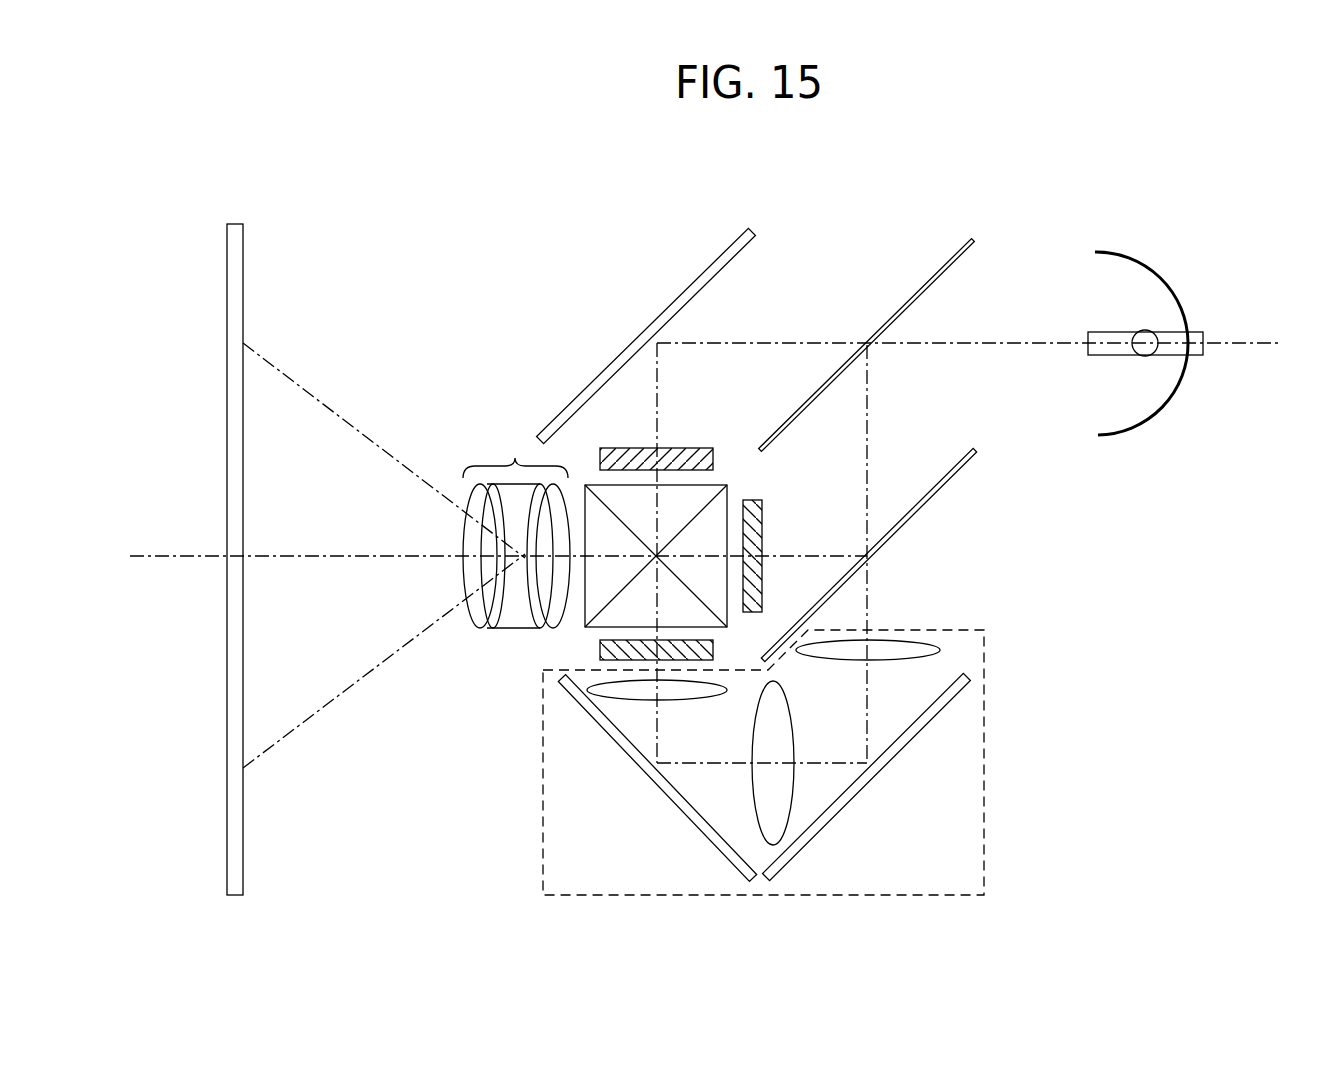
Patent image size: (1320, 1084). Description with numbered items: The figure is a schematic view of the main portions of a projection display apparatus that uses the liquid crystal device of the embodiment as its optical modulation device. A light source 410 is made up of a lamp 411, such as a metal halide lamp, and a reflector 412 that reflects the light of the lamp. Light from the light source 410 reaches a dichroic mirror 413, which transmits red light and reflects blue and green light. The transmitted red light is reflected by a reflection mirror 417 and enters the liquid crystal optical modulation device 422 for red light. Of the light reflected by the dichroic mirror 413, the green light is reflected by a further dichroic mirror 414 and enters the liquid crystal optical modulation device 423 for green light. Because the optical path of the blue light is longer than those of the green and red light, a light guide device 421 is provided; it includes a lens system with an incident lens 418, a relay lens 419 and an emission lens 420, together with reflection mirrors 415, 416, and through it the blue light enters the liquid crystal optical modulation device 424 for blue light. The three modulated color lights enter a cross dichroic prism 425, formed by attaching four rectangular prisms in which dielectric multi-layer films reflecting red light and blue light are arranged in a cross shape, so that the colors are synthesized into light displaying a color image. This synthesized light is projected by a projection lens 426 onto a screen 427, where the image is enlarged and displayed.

The light source 410 is at (1176, 344).
The lamp 411 is at (1153, 327).
The reflector 412 is at (1147, 413).
The dichroic mirror 413 is at (913, 292).
The dichroic mirror 414 is at (943, 478).
The reflection mirror 415 is at (865, 777).
The reflection mirror 416 is at (670, 793).
The reflection mirror 417 is at (698, 290).
The incident lens 418 is at (912, 650).
The relay lens 419 is at (780, 803).
The emission lens 420 is at (623, 690).
The light guide device 421 is at (985, 857).
The liquid crystal optical modulation device 422 is at (698, 445).
The liquid crystal optical modulation device 423 is at (758, 540).
The liquid crystal optical modulation device 424 is at (600, 647).
The cross dichroic prism 425 is at (600, 500).
The projection lens 426 is at (515, 457).
The screen 427 is at (243, 285).